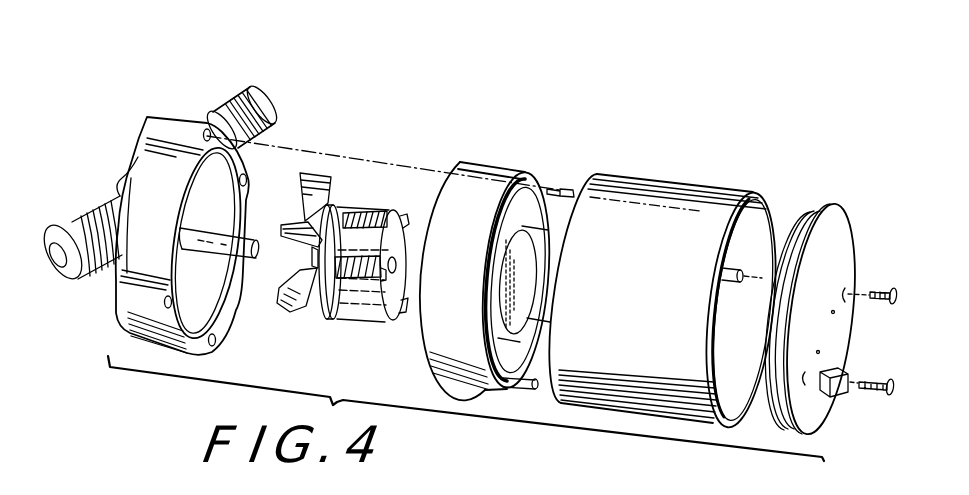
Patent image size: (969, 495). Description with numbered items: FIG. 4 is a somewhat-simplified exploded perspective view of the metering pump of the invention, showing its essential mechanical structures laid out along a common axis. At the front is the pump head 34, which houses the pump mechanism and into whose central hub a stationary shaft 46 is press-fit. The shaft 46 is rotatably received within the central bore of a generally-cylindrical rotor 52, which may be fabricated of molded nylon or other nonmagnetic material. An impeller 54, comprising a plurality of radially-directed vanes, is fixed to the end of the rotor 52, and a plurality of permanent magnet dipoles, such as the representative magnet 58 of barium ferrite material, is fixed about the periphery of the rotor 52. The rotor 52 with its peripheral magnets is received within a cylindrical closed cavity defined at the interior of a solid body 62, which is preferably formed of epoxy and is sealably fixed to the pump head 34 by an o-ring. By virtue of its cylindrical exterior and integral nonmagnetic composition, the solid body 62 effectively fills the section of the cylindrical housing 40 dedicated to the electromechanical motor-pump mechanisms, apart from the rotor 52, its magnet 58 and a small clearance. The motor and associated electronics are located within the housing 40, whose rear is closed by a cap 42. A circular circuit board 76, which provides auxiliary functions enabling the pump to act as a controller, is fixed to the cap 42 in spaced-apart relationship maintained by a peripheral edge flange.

The pump head 34 is at (139, 120).
The stationary shaft 46 is at (246, 260).
The impeller 54 is at (349, 190).
The rotor 52 is at (387, 315).
The magnet 58 is at (405, 238).
The solid body 62 is at (487, 178).
The cylindrical housing 40 is at (665, 188).
The circuit board 76 is at (773, 415).
The cap 42 is at (812, 422).